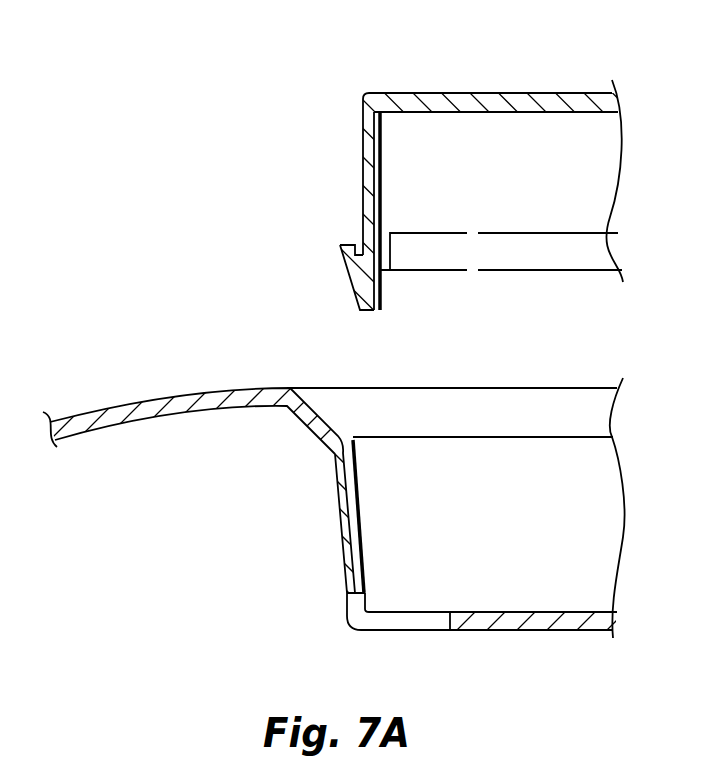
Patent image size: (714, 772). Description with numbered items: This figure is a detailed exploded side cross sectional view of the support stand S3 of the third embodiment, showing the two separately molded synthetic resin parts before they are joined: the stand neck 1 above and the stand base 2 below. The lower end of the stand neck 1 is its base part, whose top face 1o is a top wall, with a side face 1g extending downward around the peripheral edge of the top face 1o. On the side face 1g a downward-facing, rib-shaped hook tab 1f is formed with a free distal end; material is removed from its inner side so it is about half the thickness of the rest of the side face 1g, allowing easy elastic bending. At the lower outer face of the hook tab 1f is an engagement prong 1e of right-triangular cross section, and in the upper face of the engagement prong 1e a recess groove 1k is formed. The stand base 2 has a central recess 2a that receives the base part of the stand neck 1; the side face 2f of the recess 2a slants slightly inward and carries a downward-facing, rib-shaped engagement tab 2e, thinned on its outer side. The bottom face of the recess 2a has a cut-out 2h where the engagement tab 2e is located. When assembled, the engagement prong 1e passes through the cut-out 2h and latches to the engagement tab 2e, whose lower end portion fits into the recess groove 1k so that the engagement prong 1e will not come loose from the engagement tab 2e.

The stand neck 1 is at (483, 93).
The top face 1o is at (552, 100).
The hook tab 1f is at (362, 145).
The recess groove 1k is at (358, 254).
The engagement prong 1e is at (352, 278).
The side face 1g is at (433, 272).
The stand base 2 is at (140, 400).
The side face 2f is at (503, 457).
The engagement tab 2e is at (340, 522).
The cut-out 2h is at (407, 622).
The recess 2a is at (587, 607).
The support stand S3 is at (138, 198).